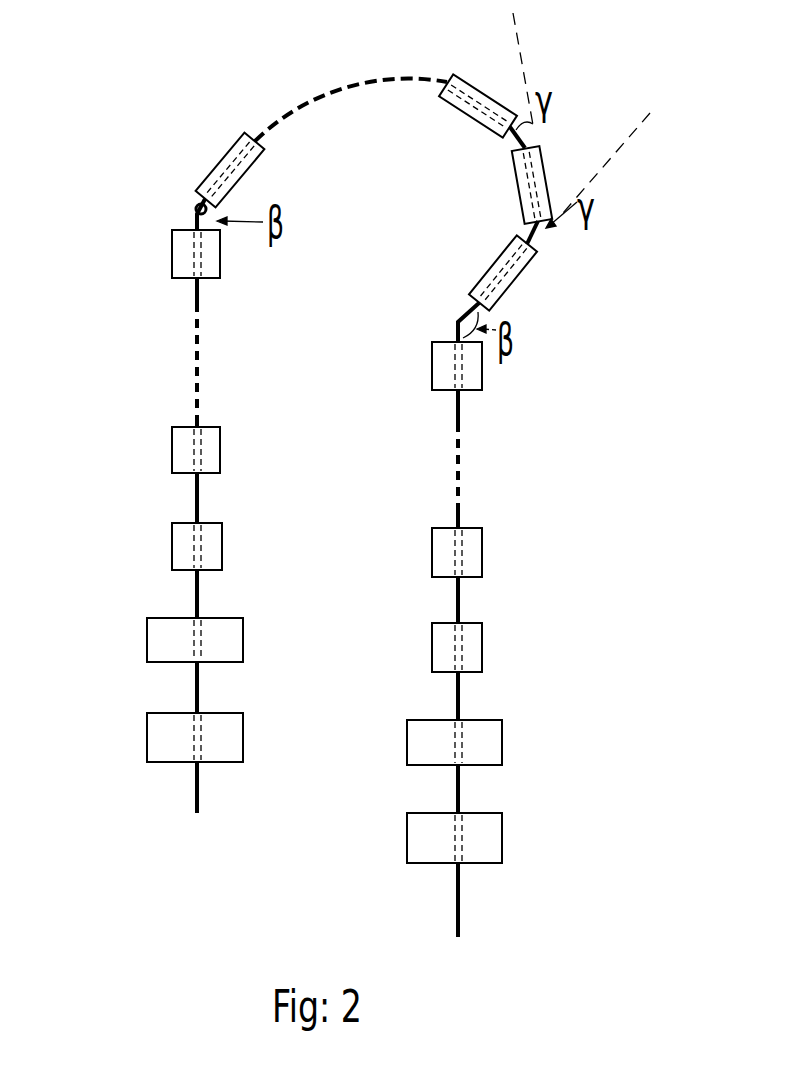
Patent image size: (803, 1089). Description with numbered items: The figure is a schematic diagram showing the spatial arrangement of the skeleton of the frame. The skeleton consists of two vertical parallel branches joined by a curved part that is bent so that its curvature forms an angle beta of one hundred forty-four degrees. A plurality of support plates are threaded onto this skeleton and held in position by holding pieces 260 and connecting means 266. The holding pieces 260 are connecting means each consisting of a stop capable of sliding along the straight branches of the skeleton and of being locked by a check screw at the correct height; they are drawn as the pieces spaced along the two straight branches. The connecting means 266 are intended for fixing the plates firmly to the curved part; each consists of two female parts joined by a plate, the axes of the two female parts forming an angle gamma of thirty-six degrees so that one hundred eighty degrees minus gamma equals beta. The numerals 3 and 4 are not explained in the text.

The first yarn/thread path (left strand) 3 is at (197, 493).
The second yarn/thread path (right strand) 4 is at (460, 697).
The holding piece 260 is at (180, 252).
The connecting means 266 is at (466, 82).